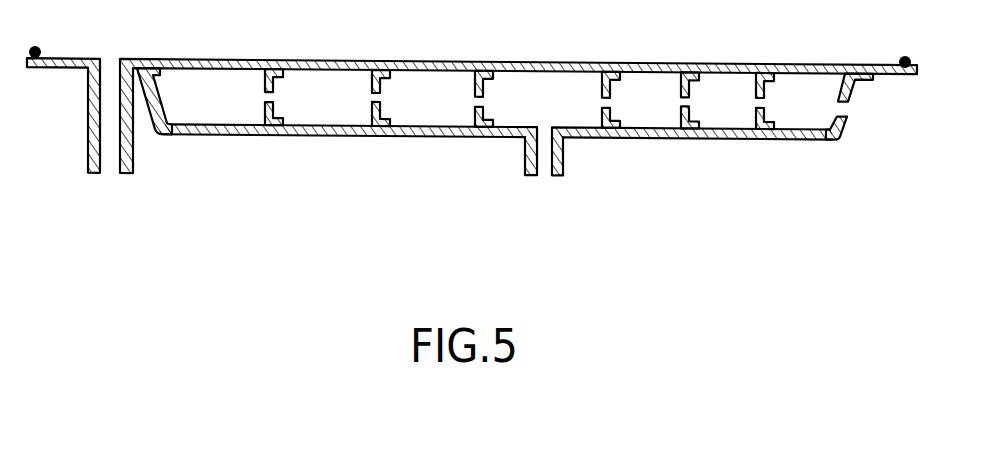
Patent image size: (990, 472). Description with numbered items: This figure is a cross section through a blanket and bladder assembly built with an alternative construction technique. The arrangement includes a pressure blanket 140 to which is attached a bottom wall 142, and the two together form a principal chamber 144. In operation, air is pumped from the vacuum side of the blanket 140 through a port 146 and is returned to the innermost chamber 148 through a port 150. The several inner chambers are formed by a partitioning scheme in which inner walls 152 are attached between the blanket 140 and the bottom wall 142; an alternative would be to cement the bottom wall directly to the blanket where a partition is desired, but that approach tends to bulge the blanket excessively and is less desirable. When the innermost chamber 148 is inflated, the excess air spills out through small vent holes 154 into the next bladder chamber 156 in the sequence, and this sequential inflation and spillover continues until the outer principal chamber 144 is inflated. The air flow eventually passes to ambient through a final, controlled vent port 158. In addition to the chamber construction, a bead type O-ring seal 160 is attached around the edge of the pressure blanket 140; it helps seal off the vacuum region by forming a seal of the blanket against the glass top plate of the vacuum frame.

The pressure blanket 140 is at (329, 59).
The bottom wall 142 is at (733, 143).
The principal chamber 144 is at (492, 104).
The port 146 is at (107, 173).
The innermost chamber 148 is at (547, 104).
The port 150 is at (542, 177).
The inner walls 152 is at (618, 118).
The vent holes 154 is at (467, 100).
The bladder chamber 156 is at (535, 99).
The vent port 158 is at (849, 110).
The bead type O-ring seal 160 is at (913, 56).